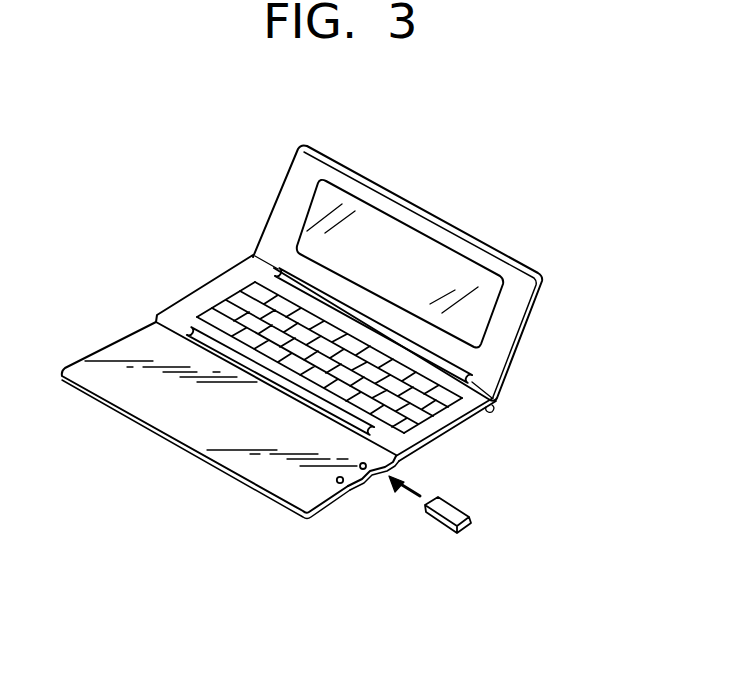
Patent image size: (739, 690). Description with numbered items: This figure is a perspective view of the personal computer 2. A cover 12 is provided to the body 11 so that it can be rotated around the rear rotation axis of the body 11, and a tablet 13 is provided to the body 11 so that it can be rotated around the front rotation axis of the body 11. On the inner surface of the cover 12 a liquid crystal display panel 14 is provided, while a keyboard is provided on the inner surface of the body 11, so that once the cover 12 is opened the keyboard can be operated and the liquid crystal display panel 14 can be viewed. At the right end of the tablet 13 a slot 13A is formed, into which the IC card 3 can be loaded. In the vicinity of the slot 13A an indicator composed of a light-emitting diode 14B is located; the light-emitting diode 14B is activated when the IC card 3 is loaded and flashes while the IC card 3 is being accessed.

The personal computer 2 is at (508, 196).
The IC card 3 is at (459, 509).
The body 11 is at (448, 410).
The cover 12 is at (510, 320).
The tablet 13 is at (203, 423).
The slot 13A is at (369, 486).
The liquid crystal display panel 14 is at (378, 238).
The light-emitting diode 14B is at (341, 484).